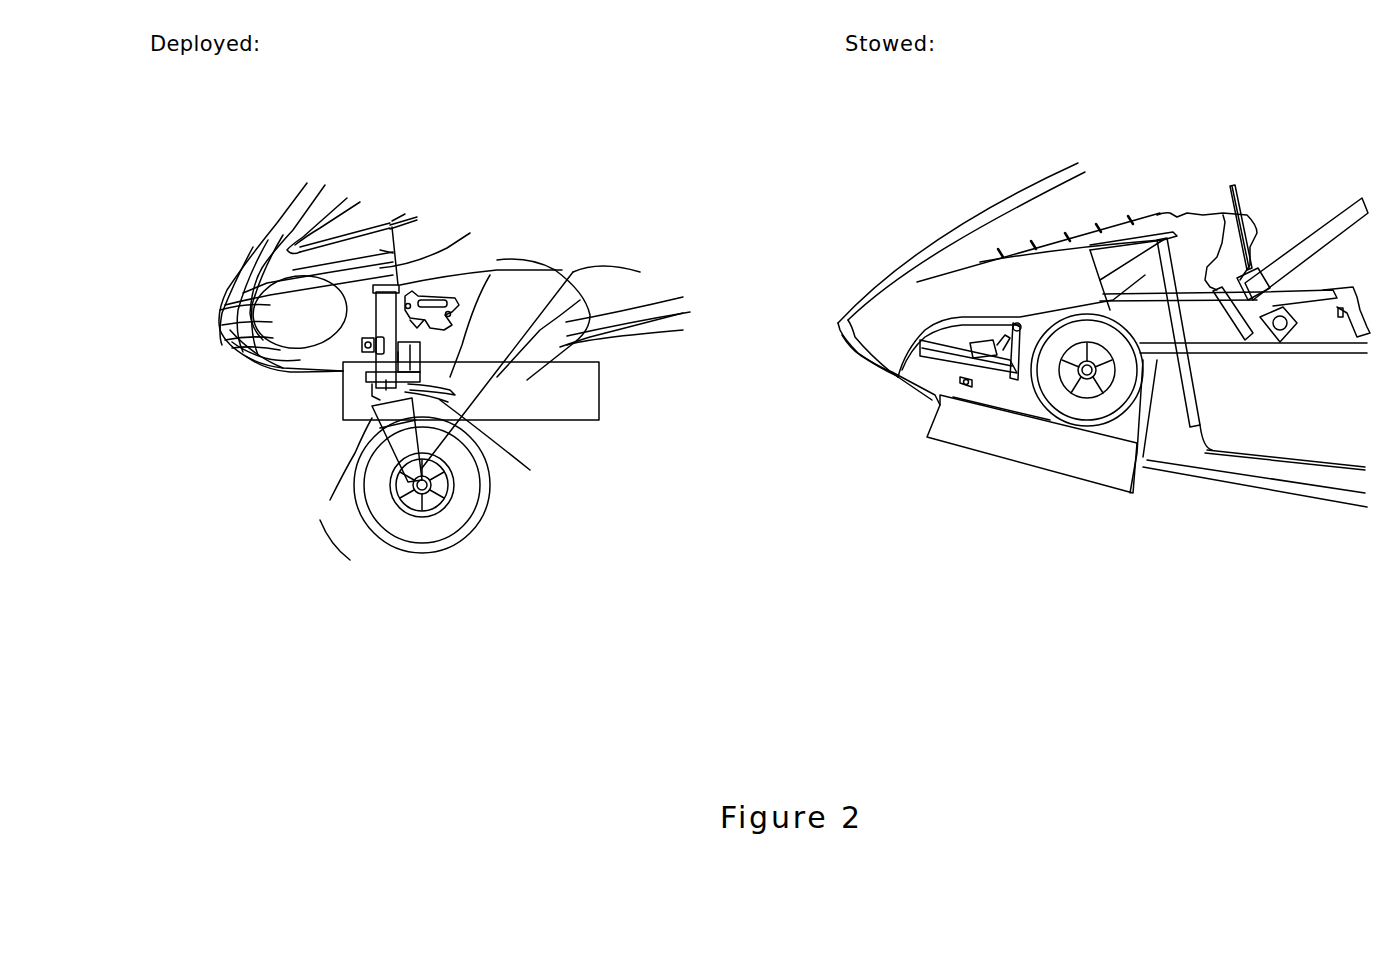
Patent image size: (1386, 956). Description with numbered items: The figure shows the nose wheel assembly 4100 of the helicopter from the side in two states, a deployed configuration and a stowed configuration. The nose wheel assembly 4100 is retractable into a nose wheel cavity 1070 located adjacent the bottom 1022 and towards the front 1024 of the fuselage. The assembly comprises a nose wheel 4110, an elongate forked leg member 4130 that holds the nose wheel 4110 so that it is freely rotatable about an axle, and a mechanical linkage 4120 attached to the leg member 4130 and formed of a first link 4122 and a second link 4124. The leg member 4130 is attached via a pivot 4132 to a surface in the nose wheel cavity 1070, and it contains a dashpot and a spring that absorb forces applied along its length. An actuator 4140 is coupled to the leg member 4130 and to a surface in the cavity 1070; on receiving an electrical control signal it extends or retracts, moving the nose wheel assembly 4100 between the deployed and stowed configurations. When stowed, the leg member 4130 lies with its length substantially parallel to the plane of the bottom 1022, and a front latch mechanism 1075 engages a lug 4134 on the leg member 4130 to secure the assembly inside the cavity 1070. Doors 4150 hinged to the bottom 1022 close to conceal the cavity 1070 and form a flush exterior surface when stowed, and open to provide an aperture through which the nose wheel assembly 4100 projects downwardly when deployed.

The front 1024 is at (212, 240).
The front latch mechanism 1075 is at (490, 275).
The first link 4122 is at (583, 298).
The bottom 1022 is at (650, 322).
The nose wheel cavity 1070 is at (500, 350).
The doors 4150 is at (570, 421).
The second link 4124 is at (432, 403).
The elongate forked leg member 4130 is at (380, 395).
The pivot 4132 is at (368, 372).
The lug 4134 is at (370, 352).
The actuator 4140 is at (276, 400).
The nose wheel 4110 is at (378, 537).
The nose wheel assembly 4100 is at (880, 432).
The mechanical linkage 4120 is at (995, 325).